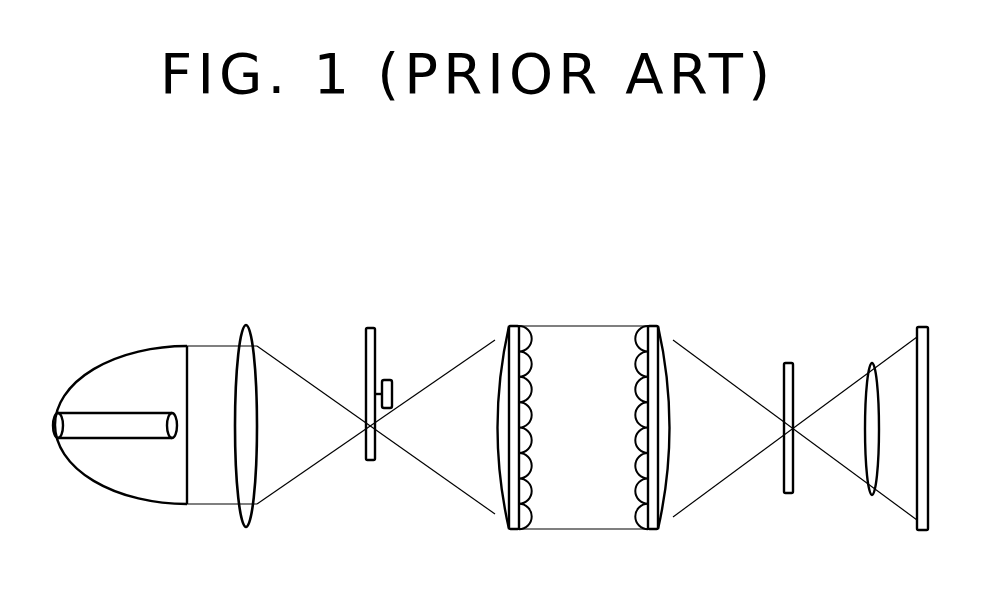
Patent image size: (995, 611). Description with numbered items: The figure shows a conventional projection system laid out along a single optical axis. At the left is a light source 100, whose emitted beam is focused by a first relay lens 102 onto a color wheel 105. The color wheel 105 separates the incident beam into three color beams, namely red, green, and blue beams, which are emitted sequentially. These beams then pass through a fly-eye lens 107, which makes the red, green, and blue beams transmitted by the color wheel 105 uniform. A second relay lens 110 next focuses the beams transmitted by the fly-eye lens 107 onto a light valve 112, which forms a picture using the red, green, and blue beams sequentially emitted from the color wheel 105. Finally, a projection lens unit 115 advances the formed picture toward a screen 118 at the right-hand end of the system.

The light source 100 is at (136, 347).
The first relay lens 102 is at (246, 325).
The color wheel 105 is at (372, 328).
The fly-eye lens 107 is at (513, 326).
The second relay lens 110 is at (652, 326).
The light valve 112 is at (788, 363).
The projection lens unit 115 is at (872, 363).
The screen 118 is at (923, 327).